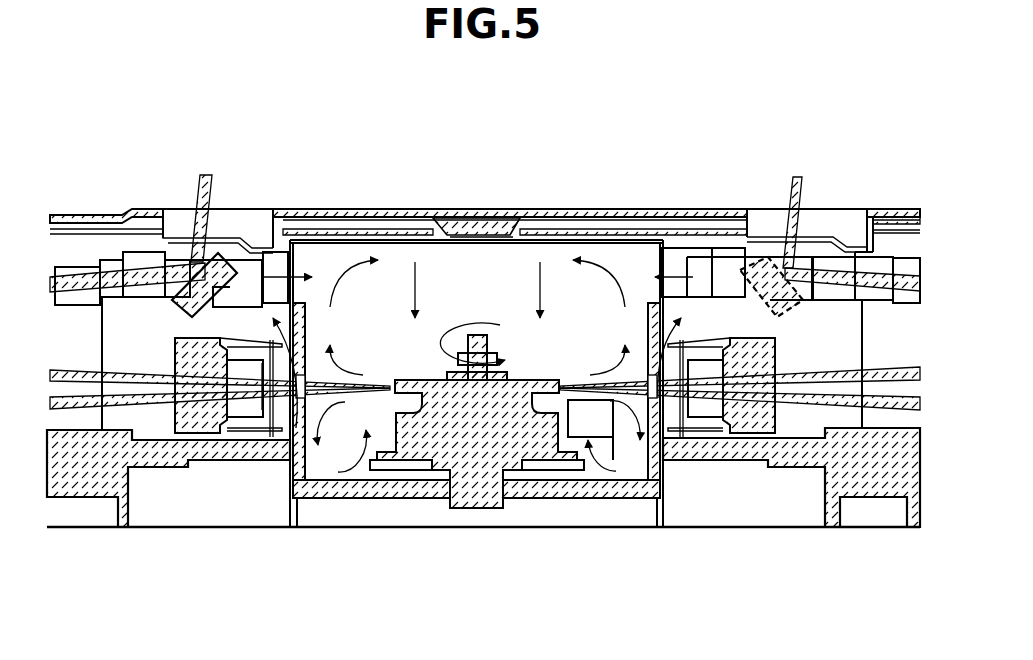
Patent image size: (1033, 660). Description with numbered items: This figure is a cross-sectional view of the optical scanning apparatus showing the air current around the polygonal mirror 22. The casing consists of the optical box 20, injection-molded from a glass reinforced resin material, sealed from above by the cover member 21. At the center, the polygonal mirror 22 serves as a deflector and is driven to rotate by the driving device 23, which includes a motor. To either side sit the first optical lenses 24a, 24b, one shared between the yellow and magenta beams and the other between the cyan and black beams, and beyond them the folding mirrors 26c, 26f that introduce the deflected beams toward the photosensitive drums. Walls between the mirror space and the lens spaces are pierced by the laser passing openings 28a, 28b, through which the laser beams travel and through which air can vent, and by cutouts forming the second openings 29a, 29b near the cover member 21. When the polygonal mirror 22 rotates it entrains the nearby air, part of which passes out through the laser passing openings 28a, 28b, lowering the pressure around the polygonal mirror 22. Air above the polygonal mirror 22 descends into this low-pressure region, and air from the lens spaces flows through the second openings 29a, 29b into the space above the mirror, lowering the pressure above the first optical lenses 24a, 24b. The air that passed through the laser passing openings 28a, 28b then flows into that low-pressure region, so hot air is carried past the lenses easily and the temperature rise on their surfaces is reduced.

The optical box 20 is at (628, 492).
The cover member 21 is at (566, 210).
The polygonal mirror 22 is at (425, 392).
The driving device 23 is at (480, 452).
The first optical lens 24a is at (200, 434).
The first optical lens 24b is at (740, 434).
The folding mirror 26c is at (217, 258).
The folding mirror 26f is at (760, 262).
The laser passing opening 28a is at (295, 435).
The laser passing opening 28b is at (672, 308).
The second opening 29a is at (302, 263).
The second opening 29b is at (653, 250).